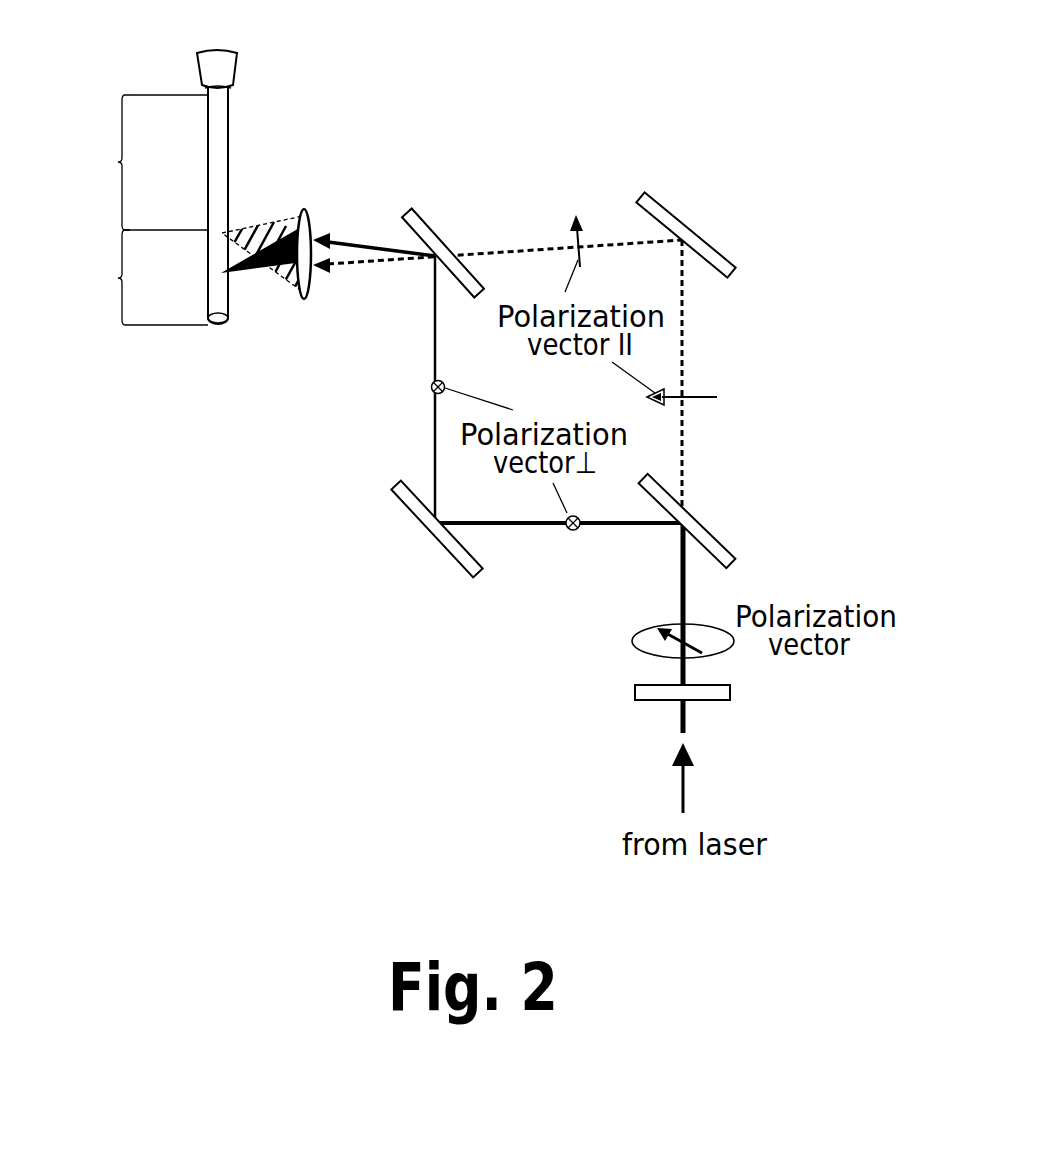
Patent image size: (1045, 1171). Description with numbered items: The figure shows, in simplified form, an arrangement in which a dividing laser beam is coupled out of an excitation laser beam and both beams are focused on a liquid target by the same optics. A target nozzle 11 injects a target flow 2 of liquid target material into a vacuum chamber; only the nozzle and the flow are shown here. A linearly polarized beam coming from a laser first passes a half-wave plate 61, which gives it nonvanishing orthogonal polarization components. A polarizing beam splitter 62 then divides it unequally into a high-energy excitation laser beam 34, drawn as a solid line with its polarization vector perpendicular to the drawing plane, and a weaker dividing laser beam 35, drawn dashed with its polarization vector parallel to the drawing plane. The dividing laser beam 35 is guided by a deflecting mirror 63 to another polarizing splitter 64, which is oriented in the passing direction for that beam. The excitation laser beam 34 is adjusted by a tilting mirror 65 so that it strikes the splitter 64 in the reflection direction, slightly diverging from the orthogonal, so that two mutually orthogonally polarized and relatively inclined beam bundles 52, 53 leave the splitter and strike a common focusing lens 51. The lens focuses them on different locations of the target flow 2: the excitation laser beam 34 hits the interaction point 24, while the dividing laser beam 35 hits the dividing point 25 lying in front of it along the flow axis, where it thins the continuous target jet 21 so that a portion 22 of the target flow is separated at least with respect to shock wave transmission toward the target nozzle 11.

The target flow 2 is at (220, 155).
The target nozzle 11 is at (225, 75).
The target jet 21 is at (132, 162).
The portion of the target flow 22 is at (132, 277).
The interaction point 24 is at (220, 273).
The dividing point 25 is at (227, 225).
The excitation laser beam 34 is at (435, 355).
The dividing laser beam 35 is at (683, 328).
The focusing lens 51 is at (297, 300).
The beam bundle 52 is at (352, 263).
The beam bundle 53 is at (338, 238).
The half-wave plate 61 is at (713, 695).
The polarizing beam splitter 62 is at (700, 523).
The deflecting mirror 63 is at (665, 215).
The polarizing splitter 64 is at (436, 238).
The tilting mirror 65 is at (460, 550).